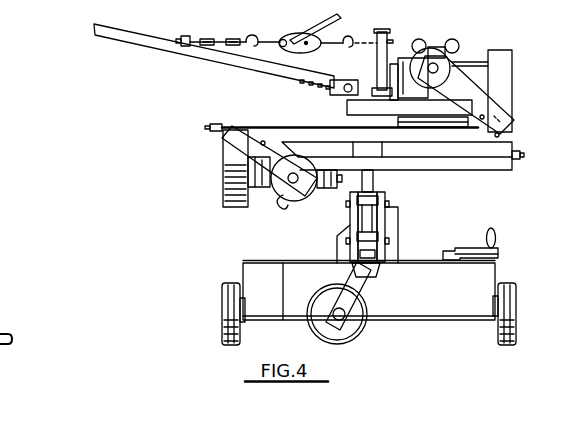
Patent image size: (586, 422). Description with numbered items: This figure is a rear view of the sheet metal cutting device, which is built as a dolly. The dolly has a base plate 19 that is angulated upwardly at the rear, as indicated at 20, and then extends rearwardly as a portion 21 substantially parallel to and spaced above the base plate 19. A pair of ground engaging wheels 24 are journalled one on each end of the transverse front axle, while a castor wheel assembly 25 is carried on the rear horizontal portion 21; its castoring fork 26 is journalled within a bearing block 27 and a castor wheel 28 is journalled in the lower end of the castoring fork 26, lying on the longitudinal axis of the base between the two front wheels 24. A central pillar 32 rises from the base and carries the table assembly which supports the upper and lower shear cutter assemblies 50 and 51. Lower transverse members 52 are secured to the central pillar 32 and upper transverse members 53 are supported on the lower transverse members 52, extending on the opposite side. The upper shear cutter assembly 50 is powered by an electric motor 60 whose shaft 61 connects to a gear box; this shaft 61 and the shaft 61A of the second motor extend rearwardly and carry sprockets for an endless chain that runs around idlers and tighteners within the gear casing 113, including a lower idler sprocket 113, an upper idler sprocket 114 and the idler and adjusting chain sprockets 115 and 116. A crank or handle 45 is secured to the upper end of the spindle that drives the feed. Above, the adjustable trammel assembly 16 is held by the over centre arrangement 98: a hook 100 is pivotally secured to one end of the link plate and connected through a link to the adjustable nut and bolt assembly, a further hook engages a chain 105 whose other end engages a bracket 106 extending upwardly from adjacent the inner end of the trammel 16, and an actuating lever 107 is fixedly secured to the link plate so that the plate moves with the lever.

The adjustable trammel assembly 16 is at (226, 59).
The base plate 19 is at (420, 322).
The angulated rear portion 20 is at (431, 314).
The rear horizontal portion 21 is at (283, 260).
The ground engaging wheels 24 is at (222, 293).
The castor wheel assembly 25 is at (318, 336).
The castoring fork 26 is at (371, 275).
The bearing block 27 is at (352, 255).
The castor wheel 28 is at (322, 301).
The central pillar 32 is at (374, 178).
The crank or handle 45 is at (498, 258).
The upper shear cutter assembly 50 is at (426, 34).
The lower shear cutter assembly 51 is at (256, 218).
The lower transverse members 52 is at (463, 169).
The upper transverse members 53 is at (257, 133).
The electric motor 60 is at (456, 48).
The drive shaft 61 is at (442, 70).
The shaft 61A is at (280, 203).
The over centre arrangement 98 is at (253, 36).
The hook 100 is at (346, 36).
The chain 105 is at (234, 36).
The bracket 106 is at (186, 36).
The actuating lever 107 is at (313, 26).
The lower idler sprocket 113 is at (278, 150).
The upper idler sprocket 114 is at (484, 117).
The idler and adjusting chain sprocket 115 is at (500, 135).
The idler and adjusting chain sprocket 116 is at (264, 141).